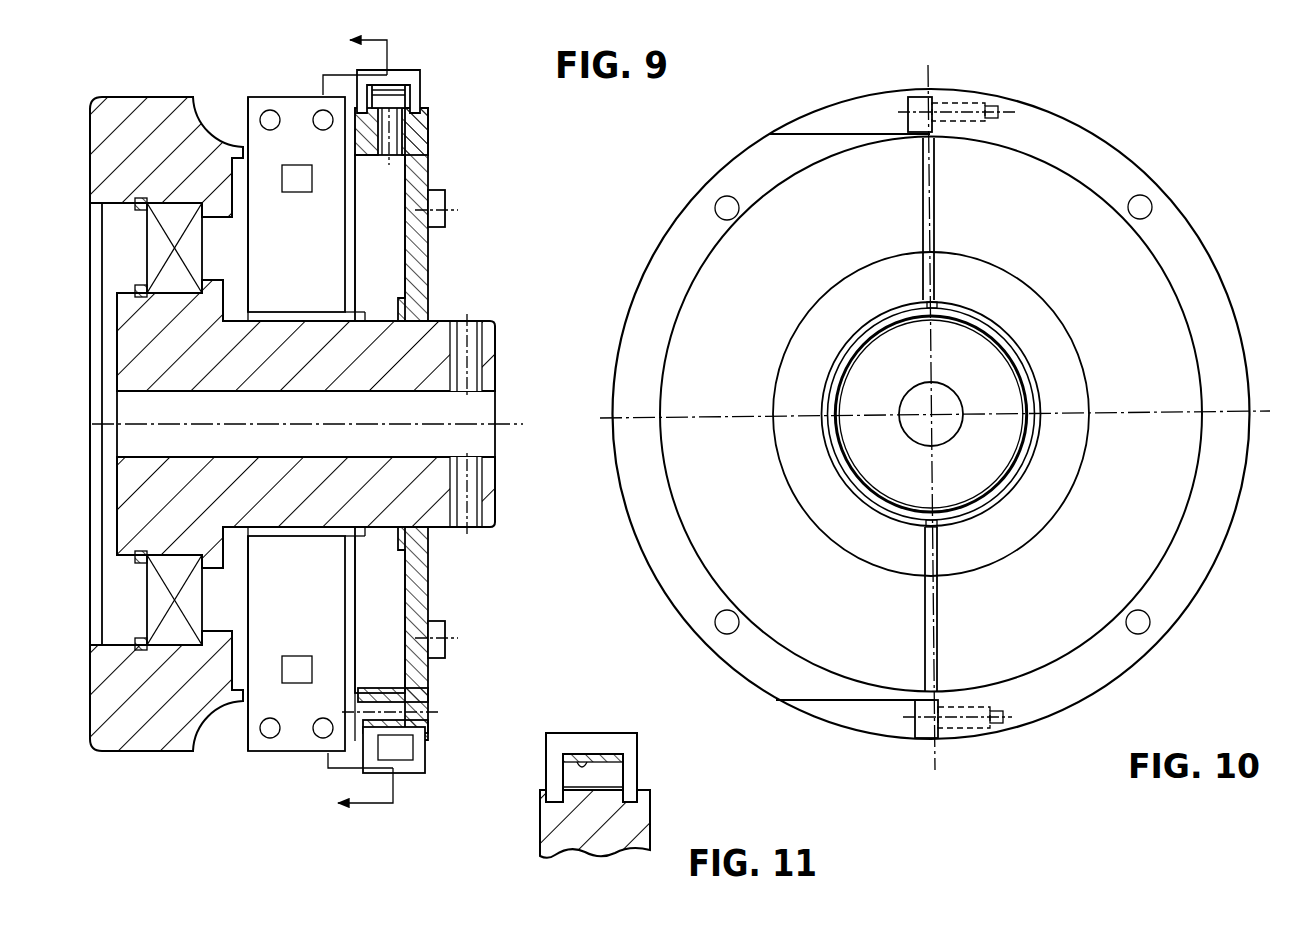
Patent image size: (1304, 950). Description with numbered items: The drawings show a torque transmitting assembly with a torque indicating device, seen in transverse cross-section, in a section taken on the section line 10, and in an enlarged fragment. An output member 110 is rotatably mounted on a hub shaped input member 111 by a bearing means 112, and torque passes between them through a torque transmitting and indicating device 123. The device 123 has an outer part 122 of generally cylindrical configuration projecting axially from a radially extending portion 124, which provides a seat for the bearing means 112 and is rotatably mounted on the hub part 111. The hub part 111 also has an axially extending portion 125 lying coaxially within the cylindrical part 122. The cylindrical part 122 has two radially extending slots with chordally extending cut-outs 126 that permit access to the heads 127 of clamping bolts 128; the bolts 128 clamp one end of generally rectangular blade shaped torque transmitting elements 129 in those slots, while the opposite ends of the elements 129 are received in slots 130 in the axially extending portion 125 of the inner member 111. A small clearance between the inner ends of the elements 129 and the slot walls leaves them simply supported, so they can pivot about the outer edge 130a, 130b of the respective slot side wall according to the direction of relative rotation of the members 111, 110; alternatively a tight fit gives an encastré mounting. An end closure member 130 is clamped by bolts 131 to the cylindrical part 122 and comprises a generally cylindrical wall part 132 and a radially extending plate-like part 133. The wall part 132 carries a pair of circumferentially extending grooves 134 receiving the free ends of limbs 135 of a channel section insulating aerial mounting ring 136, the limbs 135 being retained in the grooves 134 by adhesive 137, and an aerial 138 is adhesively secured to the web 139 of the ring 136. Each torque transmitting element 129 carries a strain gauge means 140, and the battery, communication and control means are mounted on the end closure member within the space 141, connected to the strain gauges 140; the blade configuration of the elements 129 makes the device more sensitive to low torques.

In FIG. 9, the section line 10 is at (350, 423).
In FIG. 9, the output member 110 is at (127, 102).
In FIG. 10, the output member 110 is at (1209, 231).
In FIG. 9, the hub shaped input member 111 is at (496, 321).
In FIG. 10, the hub shaped input member 111 is at (888, 462).
In FIG. 9, the bearing means 112 is at (132, 258).
In FIG. 9, the outer part 122 is at (249, 91).
In FIG. 10, the outer part 122 is at (1090, 143).
In FIG. 9, the torque transmitting and indicating device 123 is at (370, 258).
In FIG. 9, the radially extending portion 124 is at (92, 165).
In FIG. 9, the axially extending portion 125 is at (442, 372).
In FIG. 10, the axially extending portion 125 is at (940, 95).
In FIG. 10, the chordally extending cut-outs 126 is at (860, 720).
In FIG. 9, the heads of clamping bolts 127 is at (299, 108).
In FIG. 10, the heads of clamping bolts 127 is at (912, 95).
In FIG. 10, the clamping bolts 128 is at (993, 95).
In FIG. 9, the blade shaped torque transmitting elements 129 is at (341, 271).
In FIG. 9, the slots / end closure member 130 is at (442, 127).
In FIG. 10, the slots / end closure member 130 is at (963, 300).
In FIG. 10, the outer edge of slot side wall 130a is at (937, 300).
In FIG. 10, the outer edge of slot side wall 130b is at (923, 300).
In FIG. 9, the bolts 131 is at (447, 196).
In FIG. 10, the bolts 131 is at (718, 200).
In FIG. 9, the cylindrical wall part 132 is at (433, 113).
In FIG. 11, the cylindrical wall part 132 is at (650, 823).
In FIG. 9, the plate-like part 133 is at (430, 167).
In FIG. 11, the circumferentially extending grooves 134 is at (545, 792).
In FIG. 9, the limbs 135 is at (388, 93).
In FIG. 11, the limbs 135 is at (545, 765).
In FIG. 9, the insulating aerial mounting ring 136 is at (434, 92).
In FIG. 11, the insulating aerial mounting ring 136 is at (612, 722).
In FIG. 11, the adhesive 137 is at (652, 783).
In FIG. 9, the aerial 138 is at (405, 82).
In FIG. 11, the aerial 138 is at (578, 757).
In FIG. 9, the web 139 is at (427, 68).
In FIG. 11, the web 139 is at (588, 733).
In FIG. 9, the strain gauge means 140 is at (300, 192).
In FIG. 9, the space 141 is at (383, 573).